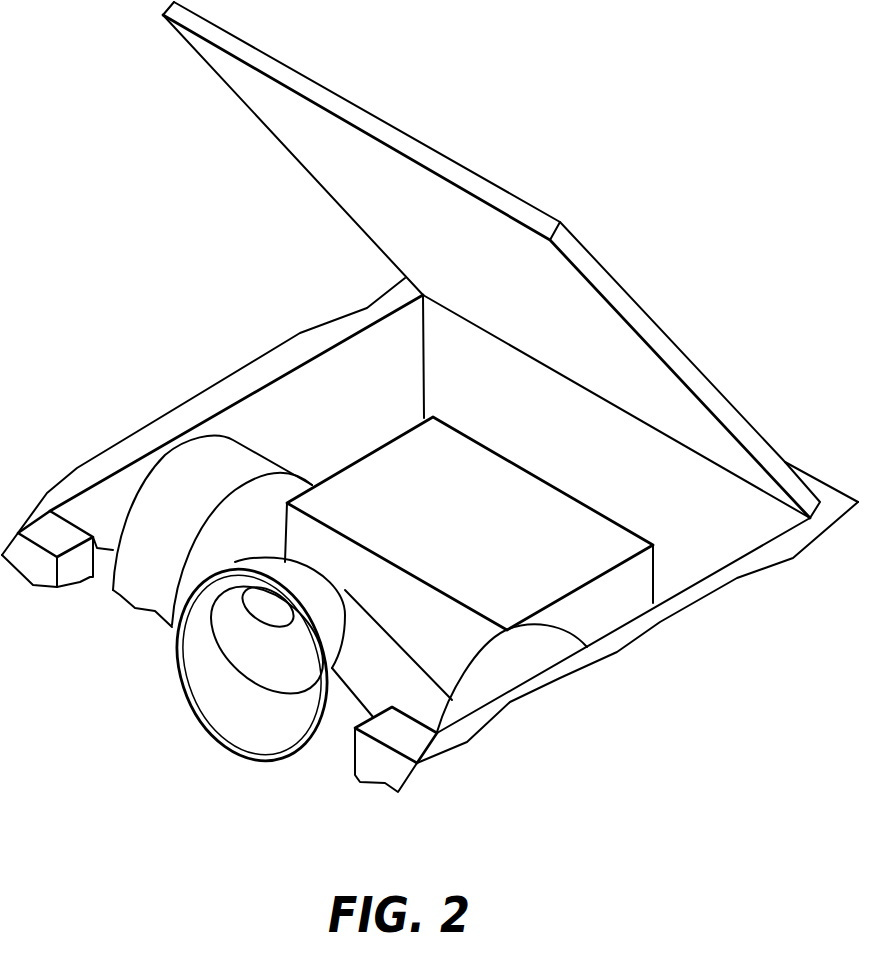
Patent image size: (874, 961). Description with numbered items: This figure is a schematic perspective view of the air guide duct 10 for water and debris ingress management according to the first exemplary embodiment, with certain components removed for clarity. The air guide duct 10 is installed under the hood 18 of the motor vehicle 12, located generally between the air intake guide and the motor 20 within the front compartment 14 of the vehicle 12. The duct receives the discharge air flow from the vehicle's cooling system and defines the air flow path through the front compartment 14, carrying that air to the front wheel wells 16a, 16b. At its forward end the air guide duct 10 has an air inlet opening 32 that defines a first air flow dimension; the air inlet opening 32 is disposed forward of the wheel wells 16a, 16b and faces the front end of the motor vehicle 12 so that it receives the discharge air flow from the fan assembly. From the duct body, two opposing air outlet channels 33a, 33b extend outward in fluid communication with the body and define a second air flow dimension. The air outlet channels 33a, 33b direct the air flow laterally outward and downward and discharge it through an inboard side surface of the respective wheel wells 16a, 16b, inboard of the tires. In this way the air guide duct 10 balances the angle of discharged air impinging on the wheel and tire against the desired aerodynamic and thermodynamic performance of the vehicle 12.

The air guide duct 10 is at (430, 397).
The motor vehicle 12 is at (712, 597).
The front compartment 14 is at (323, 403).
The wheel well 16a is at (523, 660).
The wheel well 16b is at (217, 463).
The hood 18 is at (657, 325).
The motor 20 is at (485, 497).
The air inlet opening 32 is at (217, 670).
The air outlet channel 33a is at (258, 568).
The air outlet channel 33b is at (385, 650).